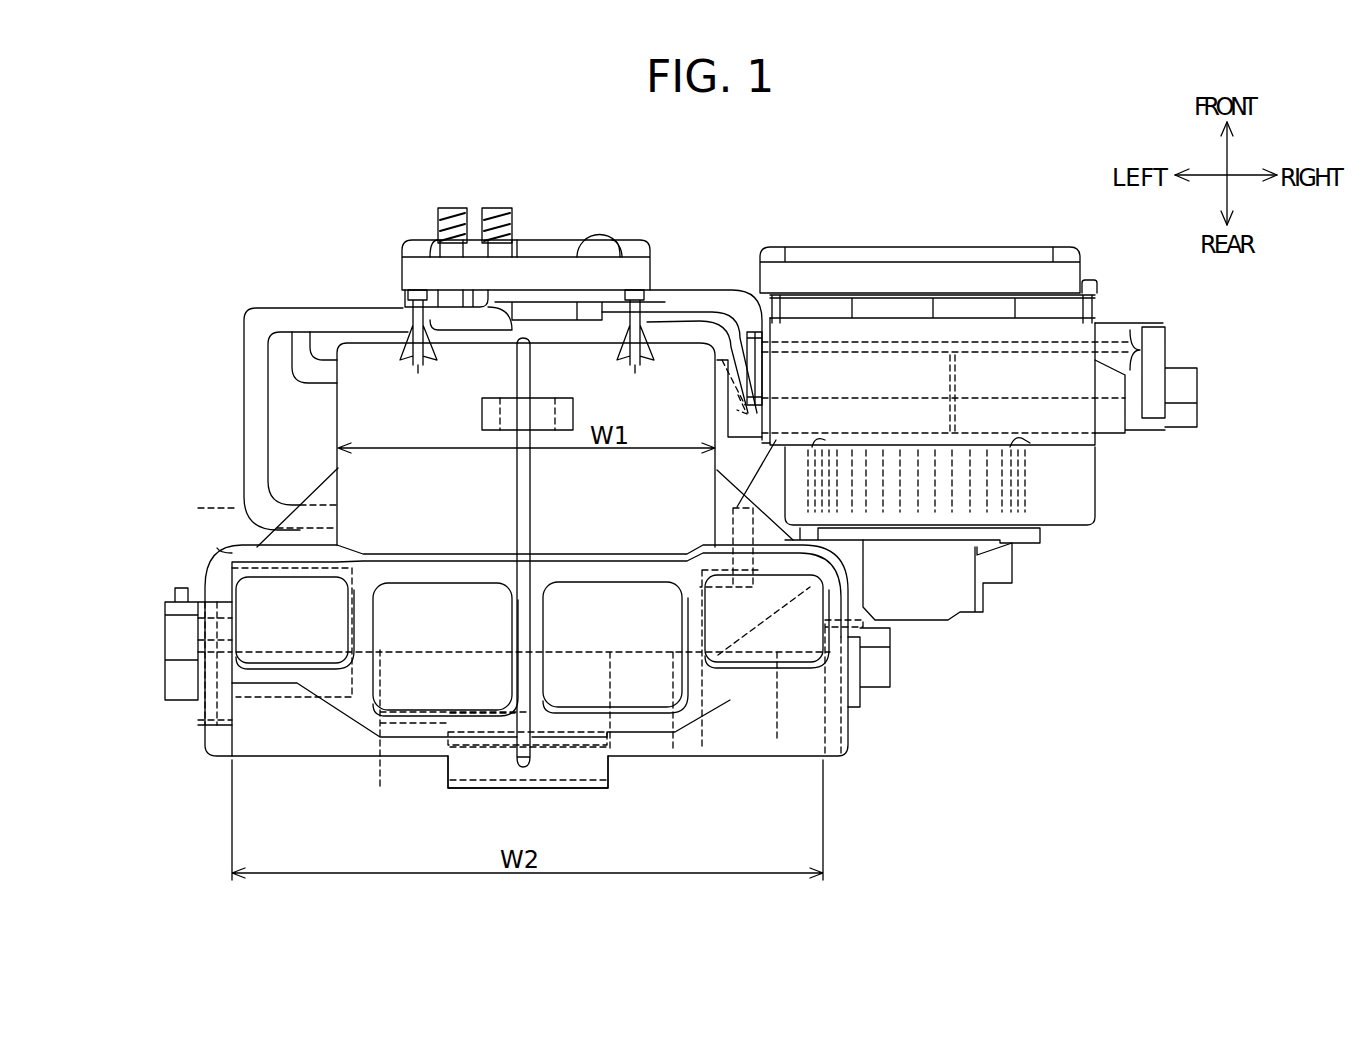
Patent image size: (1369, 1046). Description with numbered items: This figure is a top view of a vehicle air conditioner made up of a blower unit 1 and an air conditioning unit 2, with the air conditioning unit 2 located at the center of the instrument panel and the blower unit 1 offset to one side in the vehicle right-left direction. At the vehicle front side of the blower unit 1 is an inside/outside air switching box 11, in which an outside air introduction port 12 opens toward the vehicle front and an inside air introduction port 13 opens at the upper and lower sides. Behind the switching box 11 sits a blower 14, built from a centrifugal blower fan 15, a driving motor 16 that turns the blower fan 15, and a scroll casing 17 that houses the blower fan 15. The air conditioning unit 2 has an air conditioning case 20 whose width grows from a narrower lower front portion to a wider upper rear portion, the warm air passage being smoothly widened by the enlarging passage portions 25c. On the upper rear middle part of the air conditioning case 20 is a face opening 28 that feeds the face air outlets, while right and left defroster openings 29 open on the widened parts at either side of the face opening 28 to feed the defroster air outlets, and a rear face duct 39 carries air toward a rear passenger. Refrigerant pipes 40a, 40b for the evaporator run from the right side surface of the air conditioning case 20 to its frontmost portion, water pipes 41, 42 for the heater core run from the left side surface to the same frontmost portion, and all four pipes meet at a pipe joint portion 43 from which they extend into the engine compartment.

The blower unit 1 is at (1147, 491).
The air conditioning unit 2 is at (355, 292).
The inside/outside air switching box 11 is at (1116, 299).
The outside air introduction port 12 is at (983, 250).
The inside air introduction port 13 is at (905, 312).
The blower 14 is at (1092, 525).
The blower fan 15 is at (1025, 482).
The driving motor 16 is at (965, 602).
The scroll casing 17 is at (1097, 470).
The air conditioning case 20 is at (373, 405).
The enlarging passage portions 25c is at (268, 532).
The face opening 28 is at (430, 633).
The defroster openings 29 is at (263, 633).
The rear face duct 39 is at (608, 788).
The refrigerant pipe 40a is at (678, 322).
The refrigerant pipe 40b is at (717, 298).
The water pipe 41 is at (262, 338).
The water pipe 42 is at (305, 350).
The pipe joint portion 43 is at (553, 272).